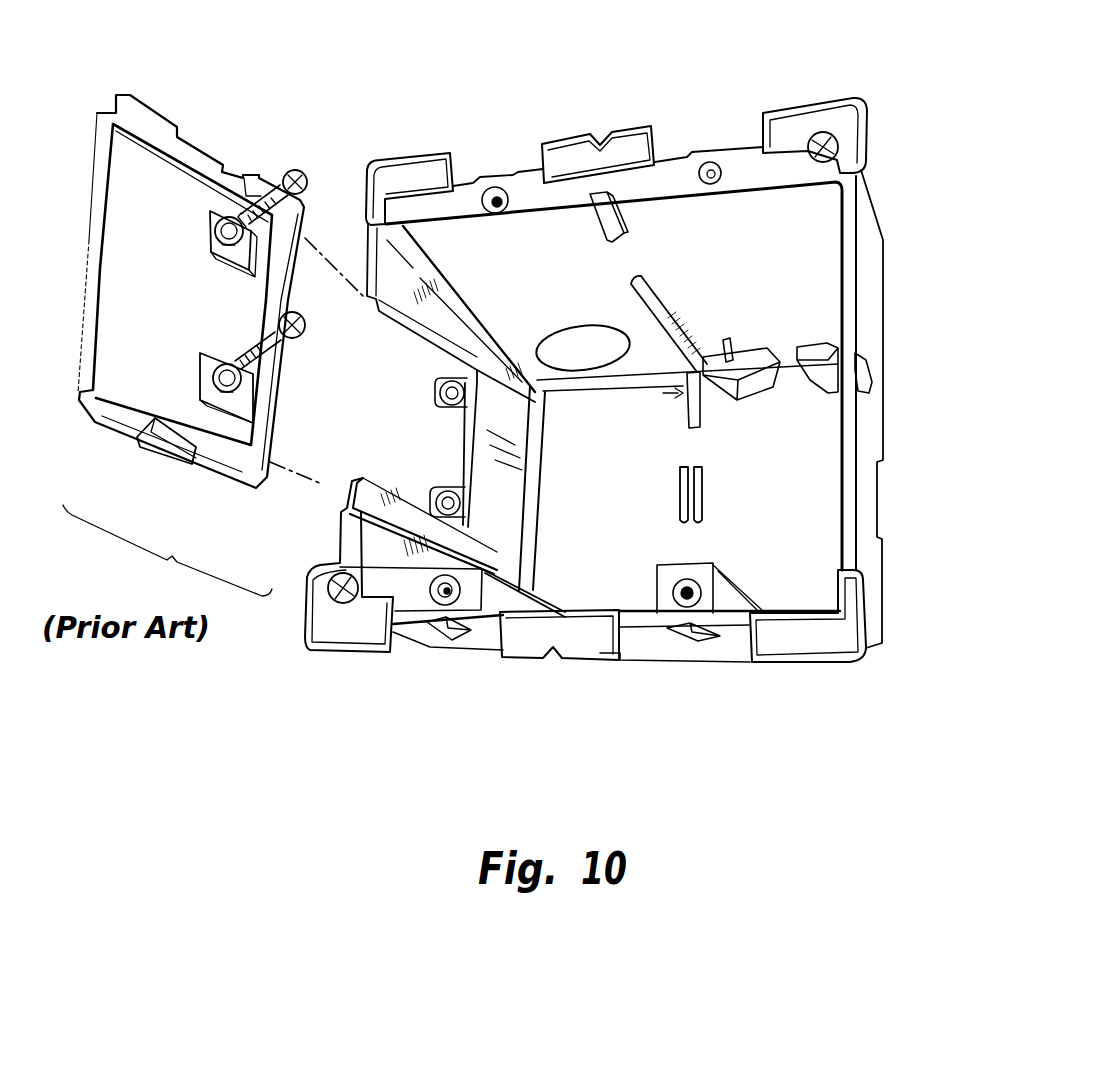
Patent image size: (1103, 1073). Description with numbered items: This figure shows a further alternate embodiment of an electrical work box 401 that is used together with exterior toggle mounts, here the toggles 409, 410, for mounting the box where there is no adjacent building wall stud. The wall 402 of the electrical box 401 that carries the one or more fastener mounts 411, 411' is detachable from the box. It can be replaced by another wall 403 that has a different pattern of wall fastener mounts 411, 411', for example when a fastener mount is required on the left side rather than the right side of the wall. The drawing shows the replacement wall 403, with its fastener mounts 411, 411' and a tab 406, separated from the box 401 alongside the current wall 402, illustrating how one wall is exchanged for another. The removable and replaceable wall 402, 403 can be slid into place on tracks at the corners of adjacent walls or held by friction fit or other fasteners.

The electrical work box 401 is at (897, 131).
The wall 402 is at (461, 331).
The removable and replaceable wall 403 is at (80, 156).
The tab of mounting plate 406 is at (249, 156).
The toggle 409 is at (347, 633).
The toggle 410 is at (782, 122).
The fastener mount 411 is at (223, 223).
The fastener mount 411' is at (218, 367).